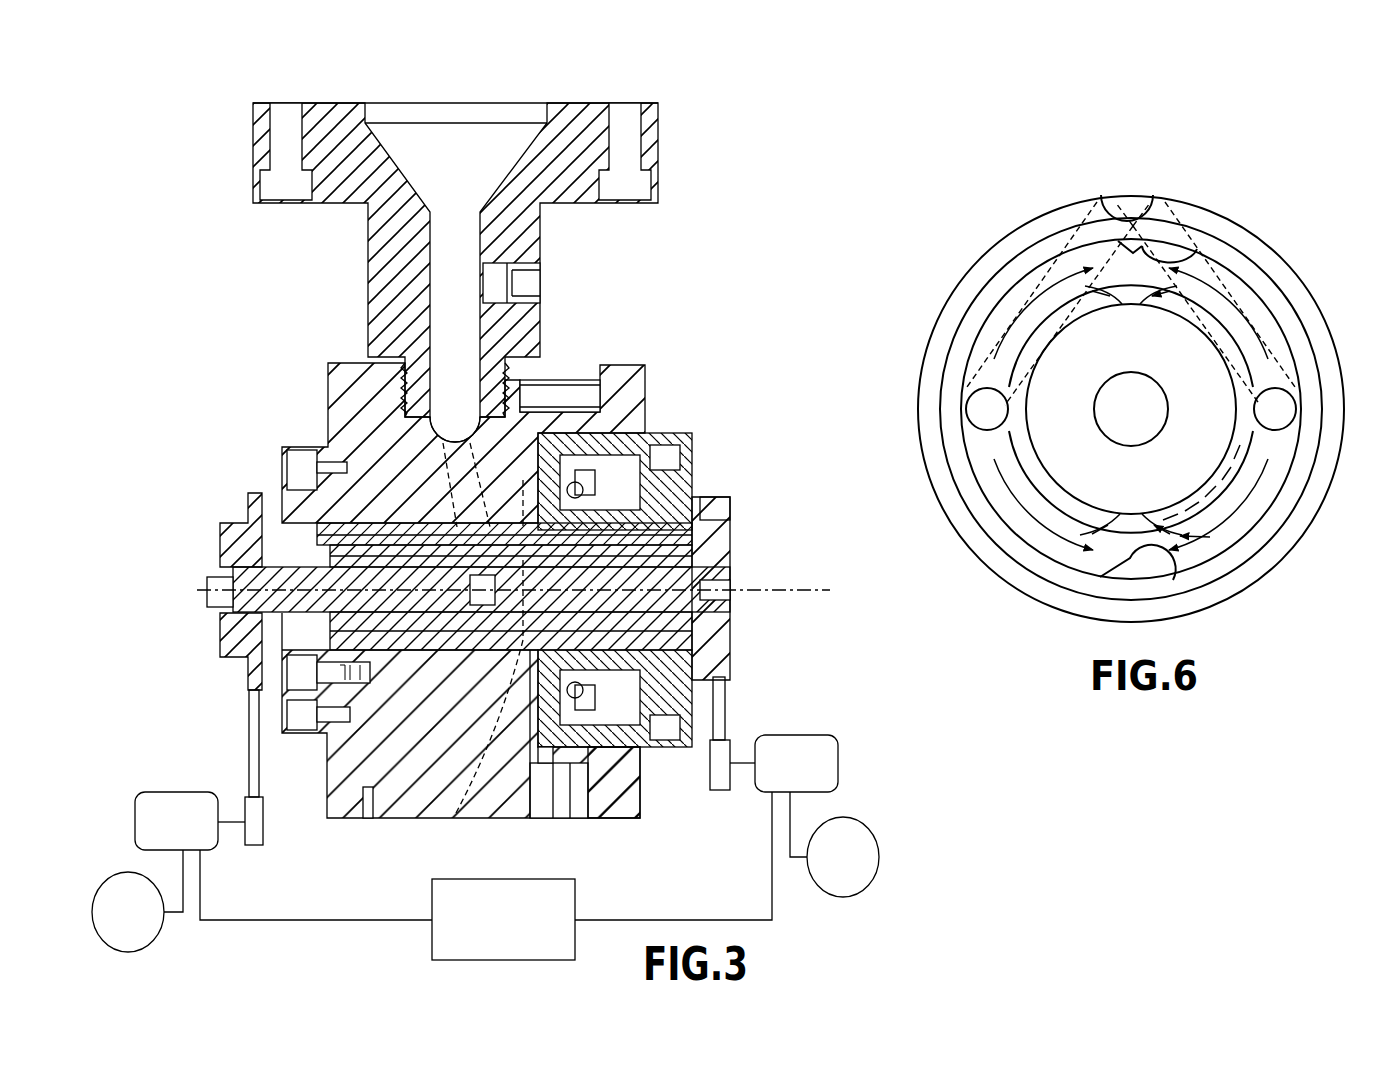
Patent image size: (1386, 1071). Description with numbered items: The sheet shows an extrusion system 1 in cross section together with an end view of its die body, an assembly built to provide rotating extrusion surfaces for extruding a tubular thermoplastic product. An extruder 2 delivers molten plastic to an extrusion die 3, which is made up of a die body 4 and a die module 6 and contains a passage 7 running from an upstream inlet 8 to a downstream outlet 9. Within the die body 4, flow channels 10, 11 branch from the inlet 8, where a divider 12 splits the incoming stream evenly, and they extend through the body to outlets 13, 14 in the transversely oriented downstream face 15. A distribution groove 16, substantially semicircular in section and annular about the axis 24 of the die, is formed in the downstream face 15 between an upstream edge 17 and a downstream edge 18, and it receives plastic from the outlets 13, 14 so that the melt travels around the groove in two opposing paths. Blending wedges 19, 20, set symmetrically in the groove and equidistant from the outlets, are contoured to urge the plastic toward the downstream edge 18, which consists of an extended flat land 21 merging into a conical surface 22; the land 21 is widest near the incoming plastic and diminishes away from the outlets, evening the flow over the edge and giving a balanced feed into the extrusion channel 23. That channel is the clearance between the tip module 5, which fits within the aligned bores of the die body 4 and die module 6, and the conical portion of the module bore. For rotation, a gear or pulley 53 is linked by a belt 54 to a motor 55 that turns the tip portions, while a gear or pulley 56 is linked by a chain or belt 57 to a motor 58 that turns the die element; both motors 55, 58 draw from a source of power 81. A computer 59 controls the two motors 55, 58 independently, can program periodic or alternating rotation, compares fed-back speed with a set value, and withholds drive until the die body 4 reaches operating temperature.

In FIG. 3, the extrusion system 1 is at (228, 313).
In FIG. 3, the extruder 2 is at (568, 230).
In FIG. 3, the extrusion die 3 is at (606, 352).
In FIG. 3, the die body 4 is at (357, 427).
In FIG. 3, the tip module 5 is at (337, 562).
In FIG. 3, the die module 6 is at (730, 520).
In FIG. 3, the passage 7 is at (533, 797).
In FIG. 3, the inlet 8 is at (450, 432).
In FIG. 6, the inlet 8 is at (1113, 207).
In FIG. 3, the downstream outlet 9 is at (730, 562).
In FIG. 6, the flow channel 10 is at (1033, 262).
In FIG. 3, the flow channel 11 is at (447, 500).
In FIG. 6, the flow channel 11 is at (1227, 283).
In FIG. 3, the divider 12 is at (470, 430).
In FIG. 6, the divider 12 is at (1142, 215).
In FIG. 6, the outlet 13 is at (975, 400).
In FIG. 6, the outlet 14 is at (1292, 400).
In FIG. 3, the downstream face 15 is at (602, 797).
In FIG. 6, the downstream face 15 is at (1032, 596).
In FIG. 3, the distribution groove 16 is at (456, 813).
In FIG. 6, the distribution groove 16 is at (1129, 538).
In FIG. 6, the upstream edge 17 is at (985, 497).
In FIG. 6, the downstream edge 18 is at (992, 444).
In FIG. 6, the blending wedge 19 is at (1185, 253).
In FIG. 6, the blending wedge 20 is at (1175, 568).
In FIG. 6, the land 21 is at (1045, 477).
In FIG. 3, the conical surface 22 is at (563, 417).
In FIG. 6, the conical surface 22 is at (1136, 427).
In FIG. 3, the extrusion channel 23 is at (612, 452).
In FIG. 3, the axis 24 is at (745, 592).
In FIG. 3, the gear or pulley 53 is at (264, 830).
In FIG. 3, the belt 54 is at (250, 727).
In FIG. 3, the motor 55 is at (160, 792).
In FIG. 3, the gear or pulley 56 is at (710, 782).
In FIG. 3, the chain or belt 57 is at (727, 715).
In FIG. 3, the motor 58 is at (820, 737).
In FIG. 3, the computer 59 is at (446, 878).
In FIG. 3, the source of power 81 is at (122, 875).